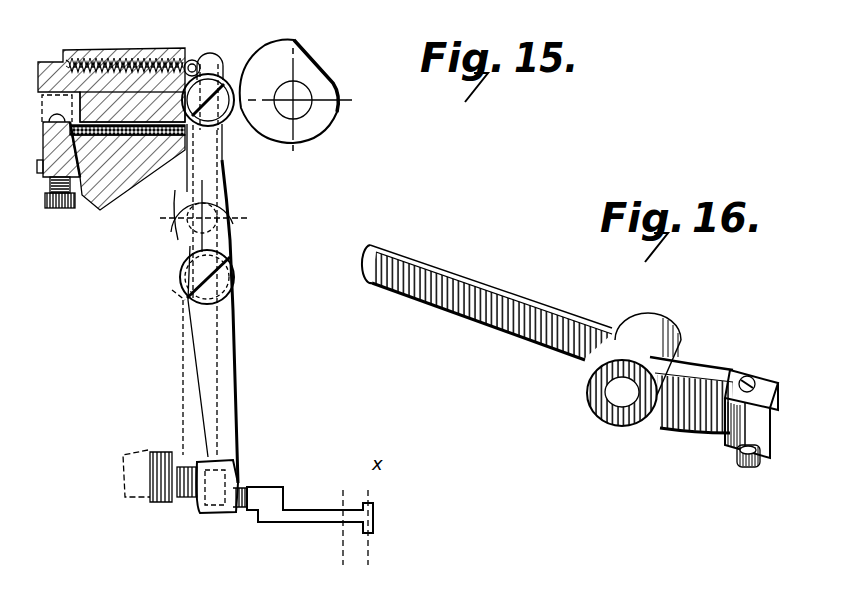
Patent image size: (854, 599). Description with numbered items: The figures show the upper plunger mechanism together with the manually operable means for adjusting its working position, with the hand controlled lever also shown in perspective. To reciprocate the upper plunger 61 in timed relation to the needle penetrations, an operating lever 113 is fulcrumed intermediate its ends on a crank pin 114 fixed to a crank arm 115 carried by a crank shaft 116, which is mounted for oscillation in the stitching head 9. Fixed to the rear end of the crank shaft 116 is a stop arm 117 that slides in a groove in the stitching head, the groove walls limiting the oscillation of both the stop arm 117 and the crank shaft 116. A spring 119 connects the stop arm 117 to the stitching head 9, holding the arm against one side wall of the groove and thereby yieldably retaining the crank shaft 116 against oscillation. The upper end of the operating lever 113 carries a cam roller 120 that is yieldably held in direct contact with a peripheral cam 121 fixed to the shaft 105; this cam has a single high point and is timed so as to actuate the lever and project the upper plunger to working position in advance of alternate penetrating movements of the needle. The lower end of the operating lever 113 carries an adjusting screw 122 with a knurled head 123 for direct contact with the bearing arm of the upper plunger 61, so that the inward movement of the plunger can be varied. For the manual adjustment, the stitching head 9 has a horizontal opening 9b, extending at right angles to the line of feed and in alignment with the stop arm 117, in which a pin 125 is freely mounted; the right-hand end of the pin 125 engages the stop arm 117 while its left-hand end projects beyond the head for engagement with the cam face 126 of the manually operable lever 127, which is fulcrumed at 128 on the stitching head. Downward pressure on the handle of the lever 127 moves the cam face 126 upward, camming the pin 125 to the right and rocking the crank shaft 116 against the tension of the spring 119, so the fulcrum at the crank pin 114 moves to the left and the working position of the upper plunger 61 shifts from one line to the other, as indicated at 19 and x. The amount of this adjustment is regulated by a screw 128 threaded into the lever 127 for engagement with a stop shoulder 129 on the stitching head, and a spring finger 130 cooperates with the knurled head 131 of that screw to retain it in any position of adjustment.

In FIG. 15, the stop shoulder 129 is at (64, 62).
In FIG. 15, the spring 119 is at (138, 52).
In FIG. 15, the cam face 126 is at (132, 106).
In FIG. 16, the cam face 126 is at (768, 428).
In FIG. 15, the manually operable lever 127 is at (127, 145).
In FIG. 16, the manually operable lever 127 is at (507, 302).
In FIG. 15, the knurled head 131 is at (128, 172).
In FIG. 16, the knurled head 131 is at (761, 466).
In FIG. 15, the spring finger 130 is at (48, 204).
In FIG. 15, the screw 128 is at (76, 198).
In FIG. 16, the screw 128 is at (727, 462).
In FIG. 15, the stitching head 9 is at (120, 195).
In FIG. 15, the horizontal opening 9b is at (146, 180).
In FIG. 15, the stop arm 117 is at (198, 62).
In FIG. 15, the operating lever 113 is at (208, 398).
In FIG. 15, the crank shaft 116 is at (232, 215).
In FIG. 15, the crank pin 114 is at (238, 278).
In FIG. 15, the crank arm 115 is at (236, 250).
In FIG. 15, the cam roller 120 is at (228, 123).
In FIG. 15, the pin 125 is at (232, 160).
In FIG. 15, the peripheral cam 121 is at (305, 68).
In FIG. 15, the shaft 105 is at (300, 112).
In FIG. 15, the adjusting screw 122 is at (187, 498).
In FIG. 15, the knurled head 123 is at (158, 500).
In FIG. 15, the upper plunger 61 is at (308, 520).
In FIG. 15, the part 19 is at (344, 488).